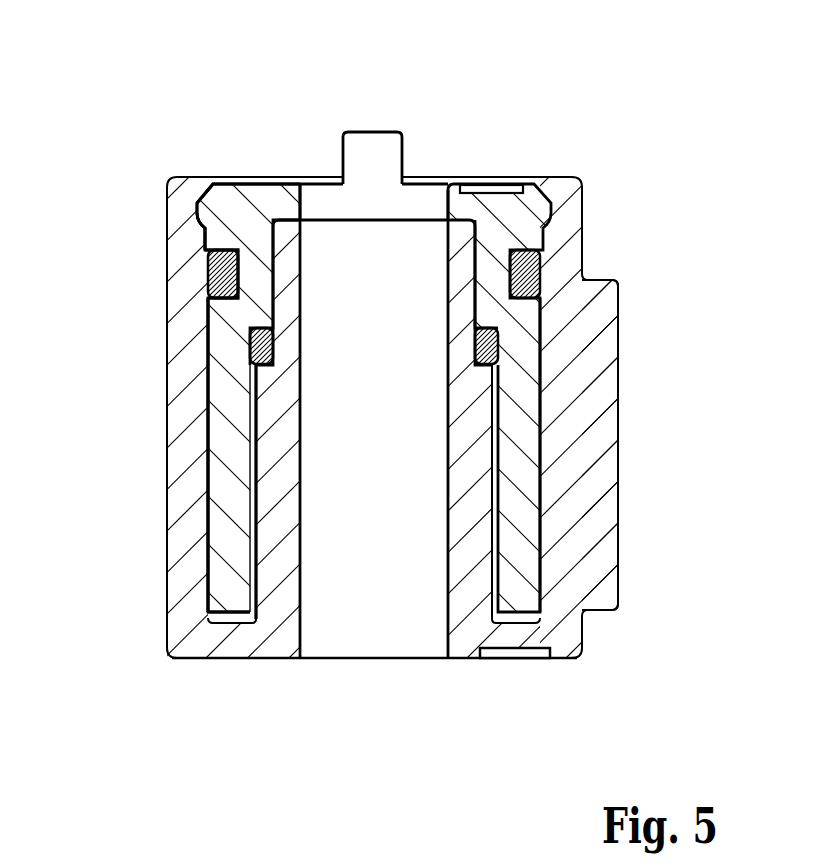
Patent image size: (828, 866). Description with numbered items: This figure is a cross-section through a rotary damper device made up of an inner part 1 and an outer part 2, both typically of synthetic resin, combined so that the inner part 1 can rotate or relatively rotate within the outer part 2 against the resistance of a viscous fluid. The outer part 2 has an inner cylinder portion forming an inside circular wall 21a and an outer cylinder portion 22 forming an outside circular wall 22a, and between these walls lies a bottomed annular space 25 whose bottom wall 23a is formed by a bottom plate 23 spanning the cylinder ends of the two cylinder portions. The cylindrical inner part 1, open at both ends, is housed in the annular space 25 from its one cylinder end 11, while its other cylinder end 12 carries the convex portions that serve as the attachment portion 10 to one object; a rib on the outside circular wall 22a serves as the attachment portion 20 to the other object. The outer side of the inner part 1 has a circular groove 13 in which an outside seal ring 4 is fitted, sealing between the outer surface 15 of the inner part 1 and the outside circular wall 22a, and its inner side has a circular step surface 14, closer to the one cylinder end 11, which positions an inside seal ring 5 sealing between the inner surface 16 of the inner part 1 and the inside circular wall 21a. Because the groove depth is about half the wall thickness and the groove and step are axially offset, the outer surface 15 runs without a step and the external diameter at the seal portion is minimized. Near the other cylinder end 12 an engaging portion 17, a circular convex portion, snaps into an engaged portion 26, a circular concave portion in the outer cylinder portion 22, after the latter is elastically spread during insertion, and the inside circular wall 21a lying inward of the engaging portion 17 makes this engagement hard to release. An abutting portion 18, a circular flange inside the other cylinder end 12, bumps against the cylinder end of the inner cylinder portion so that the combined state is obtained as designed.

The inner part 1 is at (246, 200).
The outer part 2 is at (177, 538).
The outside seal ring 4 is at (207, 286).
The inside seal ring 5 is at (498, 337).
The attachment portion 10 is at (372, 142).
The one cylinder end 11 is at (233, 590).
The other cylinder end 12 is at (225, 183).
The circular groove 13 is at (238, 272).
The circular step surface 14 is at (268, 327).
The outer surface 15 is at (170, 362).
The inner surface 16 is at (257, 433).
The engaging portion 17 is at (198, 205).
The abutting portion 18 is at (318, 197).
The attachment portion 20 is at (605, 440).
The inside circular wall 21a is at (257, 512).
The outer cylinder portion 22 is at (177, 420).
The outside circular wall 22a is at (208, 488).
The bottom plate 23 is at (260, 637).
The bottom wall 23a is at (518, 625).
The annular space 25 is at (545, 493).
The engaged portion 26 is at (198, 217).